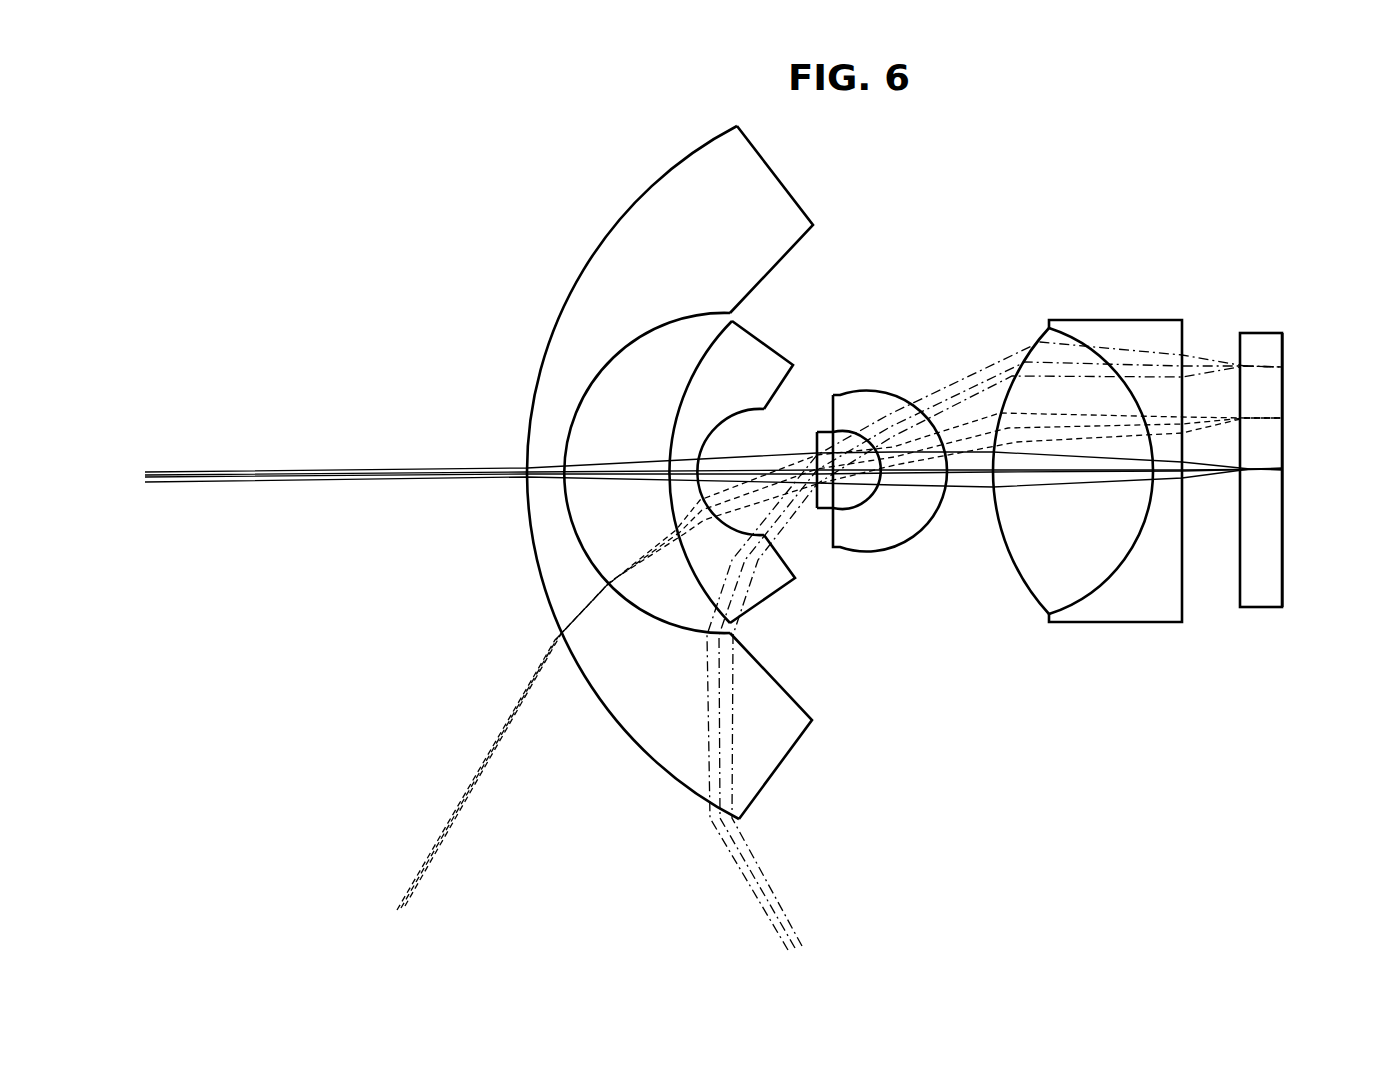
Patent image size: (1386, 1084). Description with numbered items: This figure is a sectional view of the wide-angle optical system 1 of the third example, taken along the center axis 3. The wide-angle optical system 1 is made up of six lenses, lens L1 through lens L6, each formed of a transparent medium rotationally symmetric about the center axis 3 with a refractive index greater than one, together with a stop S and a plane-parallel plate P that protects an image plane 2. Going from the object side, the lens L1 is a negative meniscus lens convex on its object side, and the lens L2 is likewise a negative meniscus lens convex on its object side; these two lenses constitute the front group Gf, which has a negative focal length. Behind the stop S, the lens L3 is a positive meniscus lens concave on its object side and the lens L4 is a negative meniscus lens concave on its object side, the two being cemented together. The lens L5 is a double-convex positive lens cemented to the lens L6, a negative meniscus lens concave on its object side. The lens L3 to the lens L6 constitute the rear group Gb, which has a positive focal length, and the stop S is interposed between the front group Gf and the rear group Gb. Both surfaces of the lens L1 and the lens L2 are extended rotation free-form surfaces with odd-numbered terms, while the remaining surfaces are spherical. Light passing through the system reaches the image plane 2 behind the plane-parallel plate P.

The wide-angle optical system 1 is at (973, 265).
The image plane 2 is at (1282, 468).
The center axis 3 is at (463, 475).
The front group Gf is at (835, 198).
The rear group Gb is at (1113, 298).
The stop S is at (813, 493).
The lens L1 is at (767, 763).
The lens L2 is at (760, 593).
The lens L3 is at (835, 497).
The lens L4 is at (860, 525).
The lens L5 is at (1042, 590).
The lens L6 is at (1124, 622).
The plane-parallel plate P is at (1263, 607).